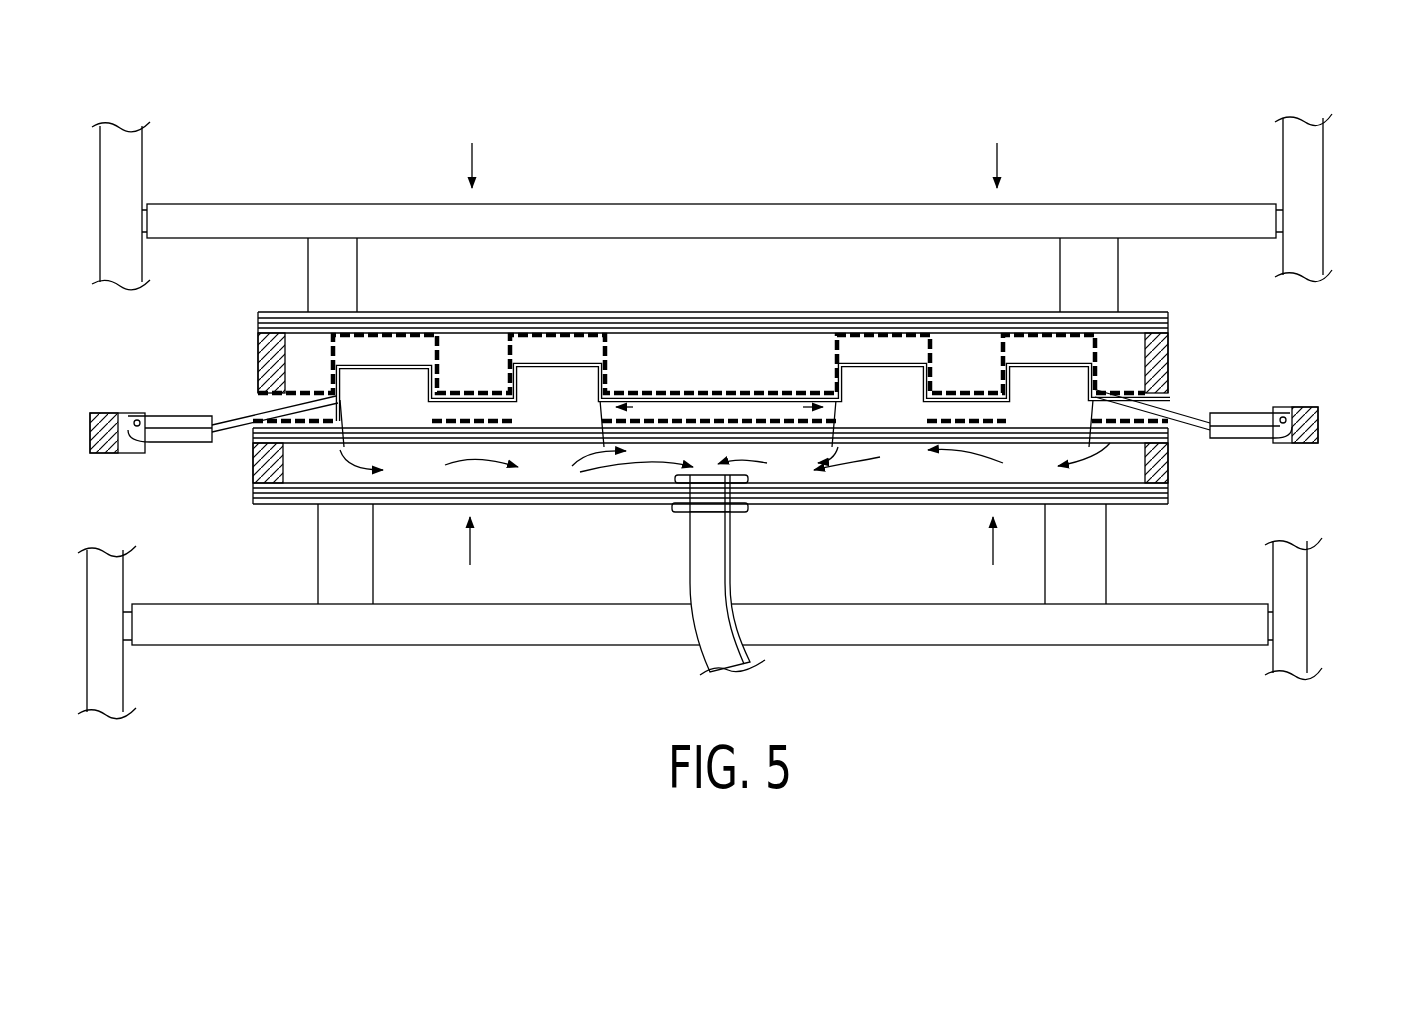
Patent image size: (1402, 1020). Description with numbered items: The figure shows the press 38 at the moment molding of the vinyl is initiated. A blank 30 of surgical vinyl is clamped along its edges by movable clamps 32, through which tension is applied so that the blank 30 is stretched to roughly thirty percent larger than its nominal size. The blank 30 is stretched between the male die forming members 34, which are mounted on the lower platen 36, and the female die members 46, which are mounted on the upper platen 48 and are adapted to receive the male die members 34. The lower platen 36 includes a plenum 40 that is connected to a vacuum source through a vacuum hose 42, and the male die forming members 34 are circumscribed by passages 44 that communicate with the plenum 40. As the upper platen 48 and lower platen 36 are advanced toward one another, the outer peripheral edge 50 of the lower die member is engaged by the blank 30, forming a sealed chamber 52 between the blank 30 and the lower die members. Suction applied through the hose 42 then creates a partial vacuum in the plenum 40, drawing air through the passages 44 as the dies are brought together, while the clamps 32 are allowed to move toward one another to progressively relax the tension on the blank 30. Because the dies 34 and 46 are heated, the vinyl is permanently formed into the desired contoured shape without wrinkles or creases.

The blank 30 is at (807, 347).
The movable clamps 32 is at (165, 445).
The male die forming member 34 is at (920, 400).
The lower platen 36 is at (744, 452).
The press 38 is at (1307, 176).
The plenum 40 is at (1041, 477).
The vacuum hose 42 is at (710, 580).
The passages 44 is at (735, 443).
The female die members 46 is at (567, 388).
The upper platen 48 is at (748, 342).
The outer peripheral edge 50 is at (1173, 402).
The sealed chamber 52 is at (460, 405).